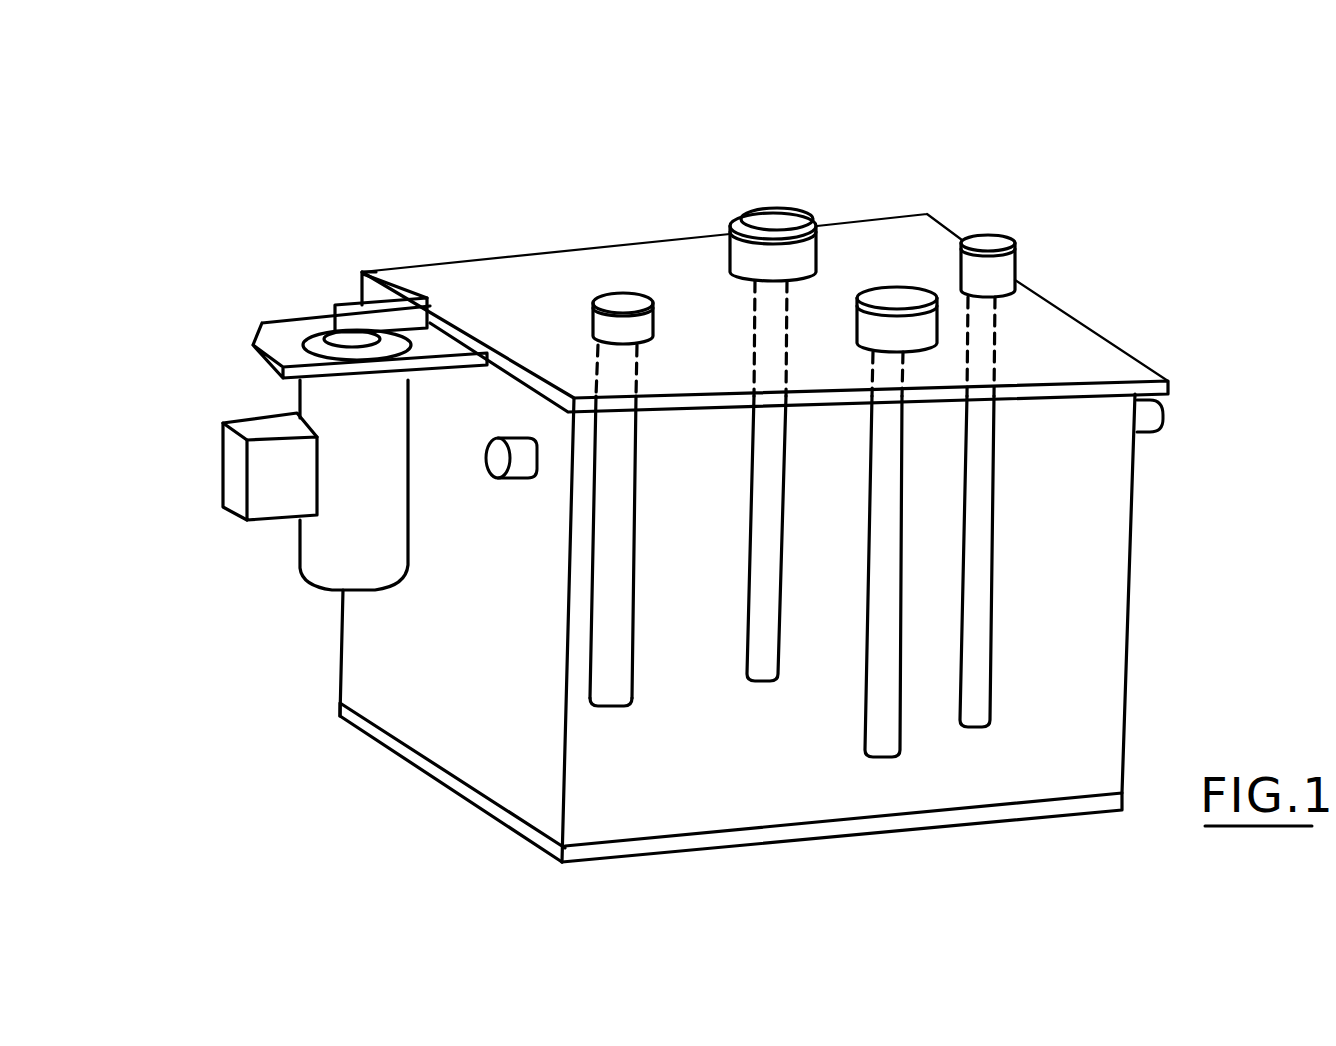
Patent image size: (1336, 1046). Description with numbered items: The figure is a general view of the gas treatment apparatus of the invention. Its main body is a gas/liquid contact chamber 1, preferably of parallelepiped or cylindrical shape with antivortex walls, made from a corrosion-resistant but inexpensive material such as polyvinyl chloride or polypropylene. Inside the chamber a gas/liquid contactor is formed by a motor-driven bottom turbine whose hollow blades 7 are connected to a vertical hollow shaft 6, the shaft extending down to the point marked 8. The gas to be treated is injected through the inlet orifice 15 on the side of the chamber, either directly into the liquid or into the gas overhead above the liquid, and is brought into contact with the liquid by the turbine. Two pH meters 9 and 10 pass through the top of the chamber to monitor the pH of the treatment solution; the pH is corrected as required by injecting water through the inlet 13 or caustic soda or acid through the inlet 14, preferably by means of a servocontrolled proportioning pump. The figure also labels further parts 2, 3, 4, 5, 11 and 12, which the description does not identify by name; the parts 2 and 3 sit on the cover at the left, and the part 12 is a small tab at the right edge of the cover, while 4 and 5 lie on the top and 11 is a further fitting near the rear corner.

The gas/liquid contact chamber 1 is at (670, 218).
The motor/pump unit 2 is at (327, 403).
The mounting plate 3 is at (352, 292).
The cover lid 4 is at (517, 300).
The pipe connection 5 is at (621, 293).
The hollow shaft 6 is at (737, 628).
The hollow blades 7 is at (731, 725).
The shaft end 8 is at (613, 706).
The pH meter 9 is at (787, 222).
The pH meter 10 is at (891, 298).
The pipe connection 11 is at (985, 243).
The fastening tab 12 is at (1168, 403).
The water inlet 13 is at (878, 483).
The caustic soda or acid inlet 14 is at (767, 505).
The inlet orifice 15 is at (520, 464).